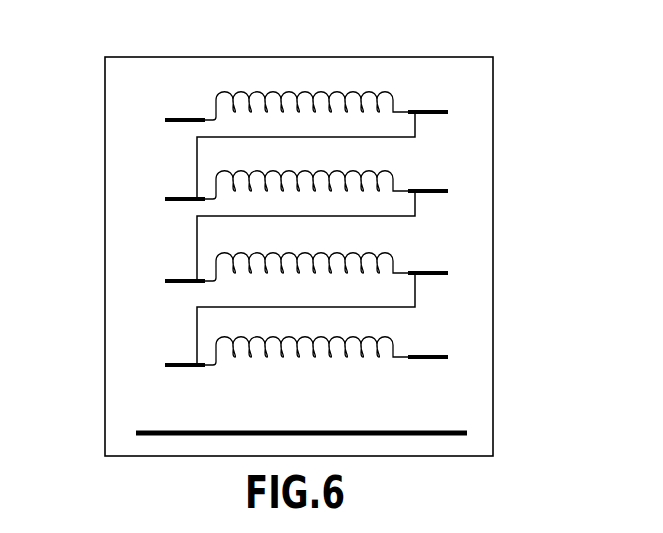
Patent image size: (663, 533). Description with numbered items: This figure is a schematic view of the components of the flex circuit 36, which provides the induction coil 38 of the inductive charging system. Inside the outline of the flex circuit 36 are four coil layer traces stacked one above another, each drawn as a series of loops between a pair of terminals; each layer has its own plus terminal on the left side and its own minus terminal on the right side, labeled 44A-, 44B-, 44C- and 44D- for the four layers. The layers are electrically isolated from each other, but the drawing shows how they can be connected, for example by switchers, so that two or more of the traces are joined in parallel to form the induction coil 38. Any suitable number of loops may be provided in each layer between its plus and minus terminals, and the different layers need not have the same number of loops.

The flex circuit 36 is at (428, 57).
The induction coil 38 is at (441, 110).
The negative terminal of coil layer 44A 44A- is at (478, 110).
The negative terminal of coil layer 44B 44B- is at (478, 189).
The negative terminal of coil layer 44C 44C- is at (478, 271).
The negative terminal of coil layer 44D 44D- is at (478, 355).